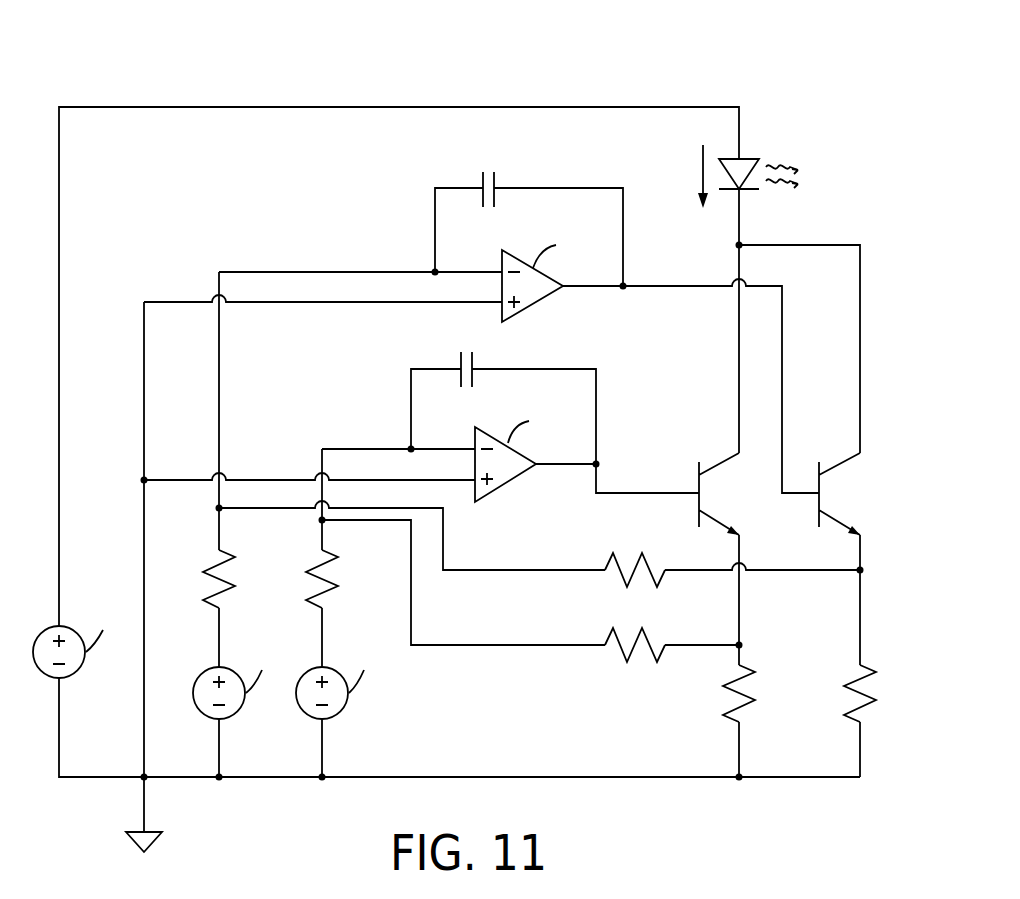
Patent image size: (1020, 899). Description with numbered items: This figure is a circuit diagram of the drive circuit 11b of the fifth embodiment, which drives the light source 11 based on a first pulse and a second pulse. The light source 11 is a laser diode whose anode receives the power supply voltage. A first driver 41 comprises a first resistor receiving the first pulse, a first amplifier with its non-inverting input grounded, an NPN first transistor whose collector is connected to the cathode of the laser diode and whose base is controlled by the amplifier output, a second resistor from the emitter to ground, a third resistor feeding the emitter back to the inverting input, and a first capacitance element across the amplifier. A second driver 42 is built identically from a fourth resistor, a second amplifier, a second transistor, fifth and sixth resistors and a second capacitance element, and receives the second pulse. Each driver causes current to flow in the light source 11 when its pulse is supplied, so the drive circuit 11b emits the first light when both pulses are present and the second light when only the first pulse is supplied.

The drive circuit 11b is at (456, 77).
The second driver 42 is at (554, 172).
The first driver 41 is at (620, 430).
The light source 11 is at (749, 157).